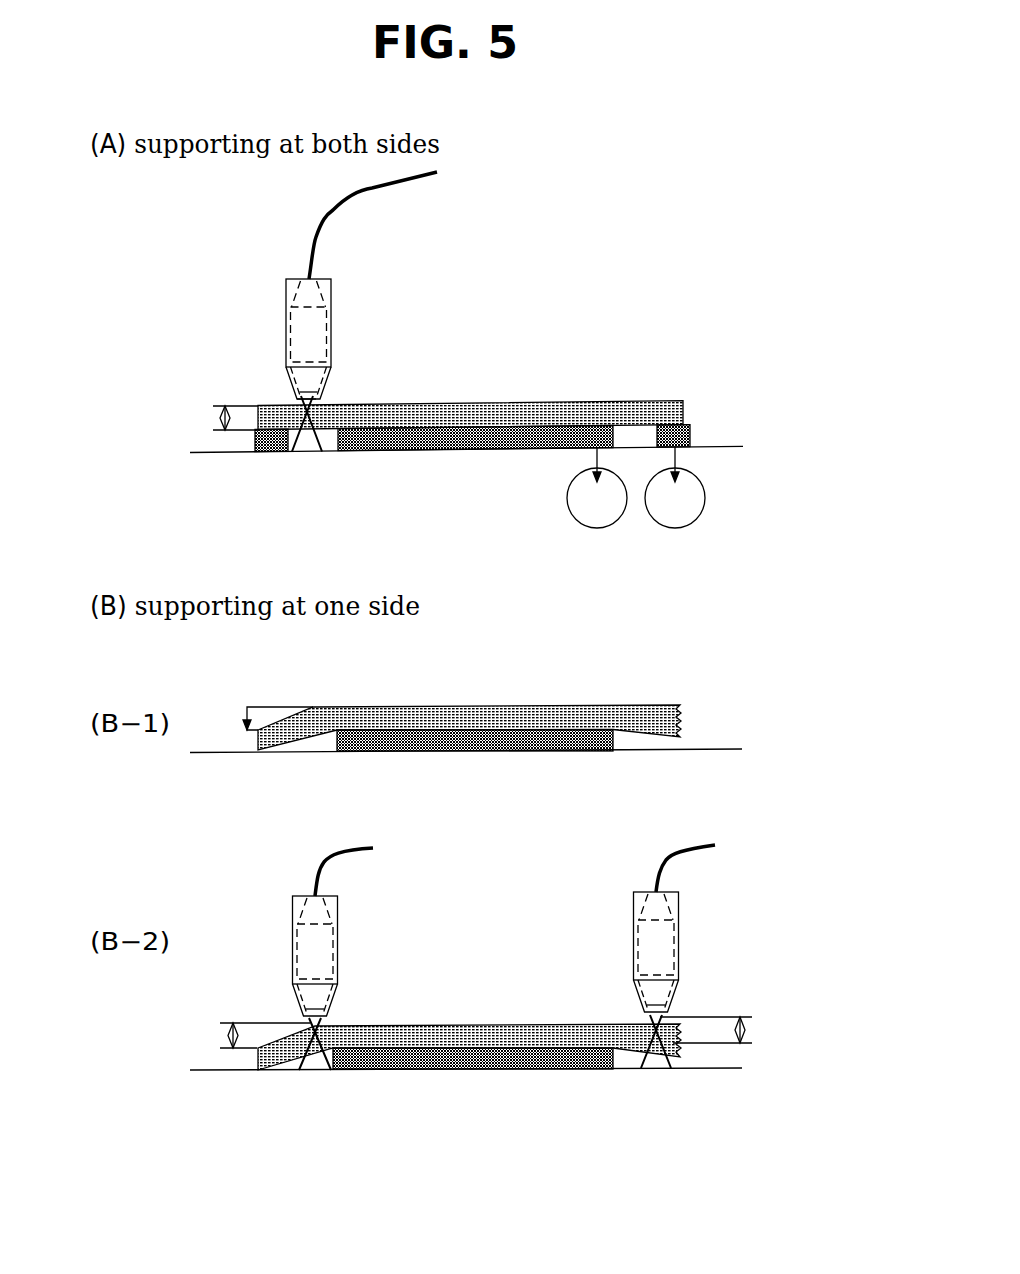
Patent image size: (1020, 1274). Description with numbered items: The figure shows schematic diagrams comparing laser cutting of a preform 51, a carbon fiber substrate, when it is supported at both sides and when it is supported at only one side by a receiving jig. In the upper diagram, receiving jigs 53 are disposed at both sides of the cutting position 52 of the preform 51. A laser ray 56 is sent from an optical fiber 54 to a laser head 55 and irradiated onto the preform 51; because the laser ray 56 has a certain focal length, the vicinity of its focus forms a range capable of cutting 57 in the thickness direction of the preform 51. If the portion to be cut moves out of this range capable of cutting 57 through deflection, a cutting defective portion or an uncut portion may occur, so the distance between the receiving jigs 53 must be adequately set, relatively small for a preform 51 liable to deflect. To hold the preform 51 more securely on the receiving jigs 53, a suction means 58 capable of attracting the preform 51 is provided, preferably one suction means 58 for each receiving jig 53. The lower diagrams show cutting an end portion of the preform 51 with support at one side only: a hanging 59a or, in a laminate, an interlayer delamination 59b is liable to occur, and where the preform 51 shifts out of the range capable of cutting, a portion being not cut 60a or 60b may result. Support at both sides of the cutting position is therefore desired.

The preform 51 is at (405, 406).
The cutting position 52 is at (320, 399).
The receiving jig 53 is at (272, 452).
The optical fiber 54 is at (400, 186).
The laser head 55 is at (331, 320).
The laser ray 56 is at (318, 440).
The range capable of cutting 57 is at (222, 414).
The suction means 58 is at (699, 510).
The hanging 59a is at (245, 715).
The interlayer delamination 59b is at (680, 708).
The portion being not cut 60a is at (318, 1068).
The portion being not cut 60b is at (658, 1066).